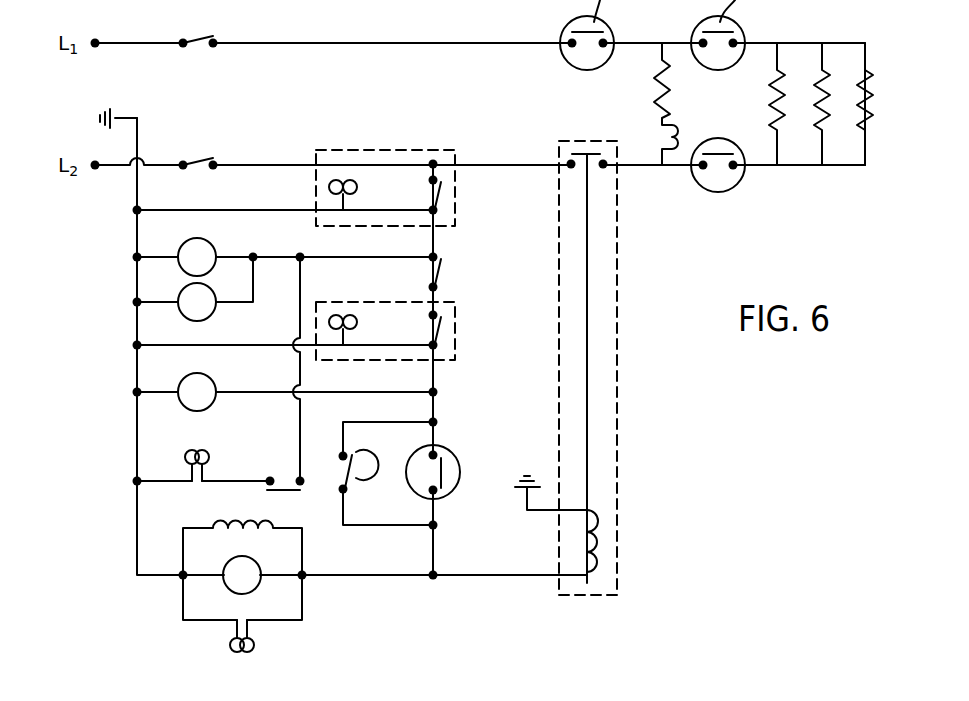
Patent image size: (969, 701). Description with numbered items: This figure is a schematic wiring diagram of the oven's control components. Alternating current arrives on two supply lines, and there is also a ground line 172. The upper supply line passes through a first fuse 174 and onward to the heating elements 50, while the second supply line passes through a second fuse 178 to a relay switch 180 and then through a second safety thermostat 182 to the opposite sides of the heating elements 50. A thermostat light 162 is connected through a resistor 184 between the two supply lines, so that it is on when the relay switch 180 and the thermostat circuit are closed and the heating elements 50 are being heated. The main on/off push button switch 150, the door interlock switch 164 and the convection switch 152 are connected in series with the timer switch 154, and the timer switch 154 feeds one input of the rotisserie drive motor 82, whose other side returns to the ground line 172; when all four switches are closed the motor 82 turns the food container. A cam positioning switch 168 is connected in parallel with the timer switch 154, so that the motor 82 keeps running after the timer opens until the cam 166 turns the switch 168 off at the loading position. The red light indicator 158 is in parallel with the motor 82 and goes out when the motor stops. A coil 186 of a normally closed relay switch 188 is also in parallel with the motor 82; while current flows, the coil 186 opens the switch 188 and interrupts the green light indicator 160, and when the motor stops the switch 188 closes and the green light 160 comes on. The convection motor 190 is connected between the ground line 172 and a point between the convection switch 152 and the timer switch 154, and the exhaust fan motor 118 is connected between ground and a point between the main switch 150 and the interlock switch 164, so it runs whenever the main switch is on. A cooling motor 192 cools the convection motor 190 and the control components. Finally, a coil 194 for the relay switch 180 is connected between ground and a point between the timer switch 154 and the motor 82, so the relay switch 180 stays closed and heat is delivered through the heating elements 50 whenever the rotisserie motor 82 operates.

The first fuse 174 is at (200, 35).
The second fuse 178 is at (200, 160).
The ground line 172 is at (120, 117).
The main on/off push button switch 150 is at (435, 198).
The interlock switch 164 is at (442, 272).
The convection switch 152 is at (440, 330).
The relay switch 180 is at (577, 146).
The coil 194 is at (605, 532).
The resistor 184 is at (656, 97).
The thermostat light 162 is at (683, 130).
The second safety thermostat 182 is at (725, 180).
The heating elements 50 is at (777, 130).
The cooling motor 192 is at (185, 245).
The motor 118 is at (213, 310).
The convection motor 190 is at (183, 388).
The rotisserie drive motor 82 is at (225, 580).
The green light indicator 160 is at (197, 450).
The normally closed relay switch 188 is at (265, 487).
The coil 186 is at (213, 518).
The red light indicator 158 is at (232, 645).
The cam positioning switch 168 is at (340, 470).
The cam 166 is at (375, 472).
The timer switch 154 is at (455, 465).